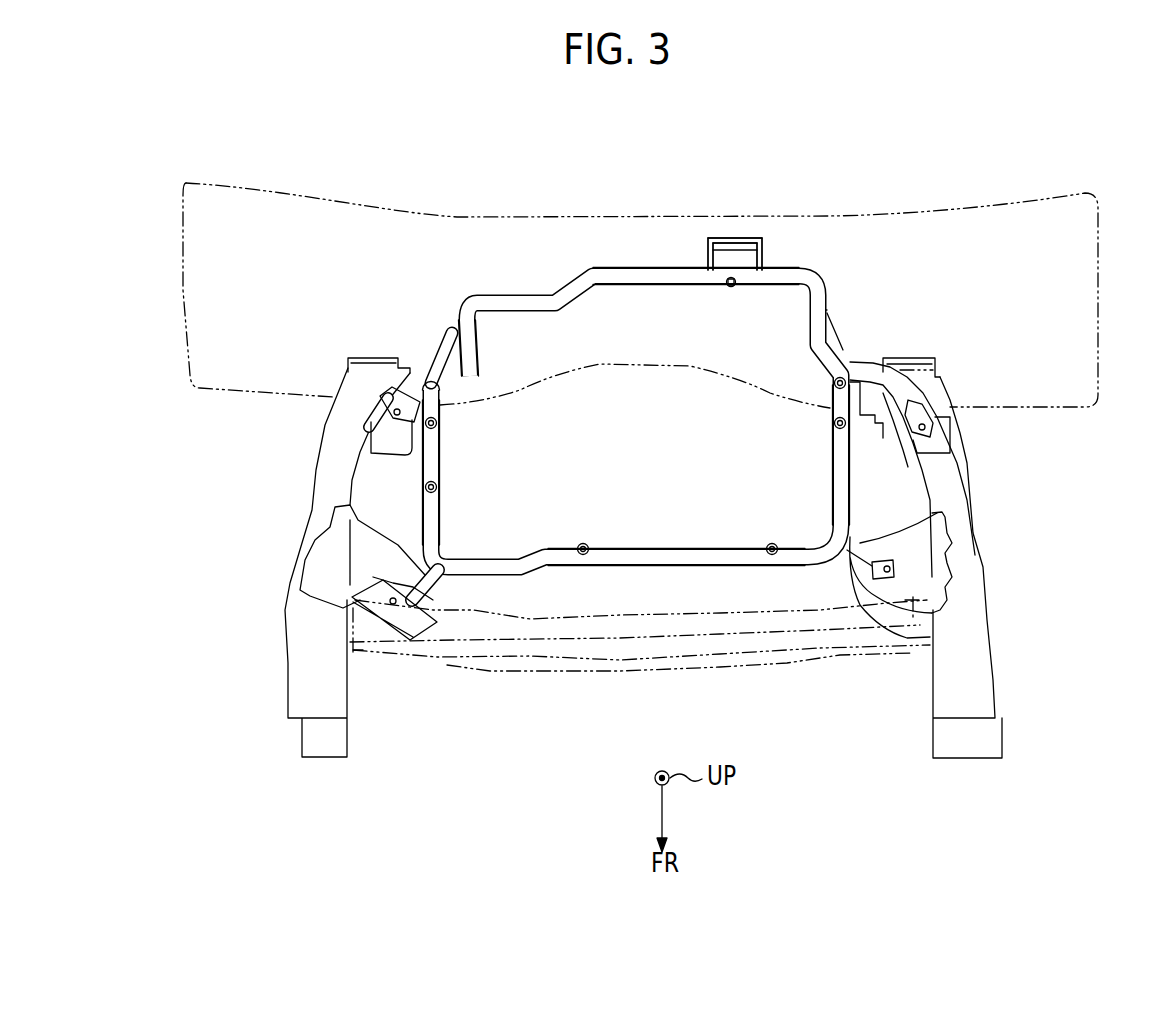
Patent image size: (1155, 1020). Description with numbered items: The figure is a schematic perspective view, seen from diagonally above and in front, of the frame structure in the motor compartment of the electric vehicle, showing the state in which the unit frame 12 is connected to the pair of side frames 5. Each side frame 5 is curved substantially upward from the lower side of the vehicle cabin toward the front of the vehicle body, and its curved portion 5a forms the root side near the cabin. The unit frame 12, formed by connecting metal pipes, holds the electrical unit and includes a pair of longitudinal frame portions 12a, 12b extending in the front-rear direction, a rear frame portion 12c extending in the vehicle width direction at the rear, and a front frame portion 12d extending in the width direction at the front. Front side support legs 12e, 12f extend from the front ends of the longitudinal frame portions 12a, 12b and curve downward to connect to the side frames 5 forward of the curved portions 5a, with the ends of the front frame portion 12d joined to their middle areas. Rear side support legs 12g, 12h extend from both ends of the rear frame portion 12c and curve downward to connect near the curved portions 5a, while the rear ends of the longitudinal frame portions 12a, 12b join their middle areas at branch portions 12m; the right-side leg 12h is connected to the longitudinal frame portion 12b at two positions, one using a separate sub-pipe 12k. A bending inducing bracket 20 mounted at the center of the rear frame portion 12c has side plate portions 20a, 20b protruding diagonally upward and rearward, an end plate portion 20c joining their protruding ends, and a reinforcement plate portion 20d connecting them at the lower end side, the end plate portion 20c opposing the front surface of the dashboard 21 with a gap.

The side frame 5 is at (300, 676).
The curved portion 5a is at (350, 380).
The unit frame 12 is at (587, 580).
The longitudinal frame portion 12a is at (850, 483).
The longitudinal frame portion 12b is at (430, 470).
The rear frame portion 12c is at (620, 268).
The front frame portion 12d is at (670, 563).
The front side support leg 12e is at (934, 542).
The front side support leg 12f is at (430, 575).
The rear side support leg 12g is at (887, 376).
The rear side support leg 12h is at (422, 380).
The sub-pipe 12k is at (440, 352).
The branch portion 12m is at (448, 330).
The bending inducing bracket 20 is at (741, 225).
The side plate portion 20a is at (763, 253).
The side plate portion 20b is at (708, 253).
The end plate portion 20c is at (723, 238).
The reinforcement plate portion 20d is at (720, 260).
The dashboard 21 is at (943, 210).